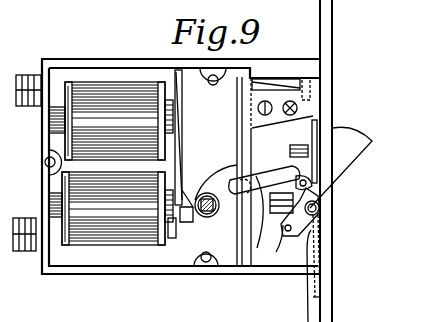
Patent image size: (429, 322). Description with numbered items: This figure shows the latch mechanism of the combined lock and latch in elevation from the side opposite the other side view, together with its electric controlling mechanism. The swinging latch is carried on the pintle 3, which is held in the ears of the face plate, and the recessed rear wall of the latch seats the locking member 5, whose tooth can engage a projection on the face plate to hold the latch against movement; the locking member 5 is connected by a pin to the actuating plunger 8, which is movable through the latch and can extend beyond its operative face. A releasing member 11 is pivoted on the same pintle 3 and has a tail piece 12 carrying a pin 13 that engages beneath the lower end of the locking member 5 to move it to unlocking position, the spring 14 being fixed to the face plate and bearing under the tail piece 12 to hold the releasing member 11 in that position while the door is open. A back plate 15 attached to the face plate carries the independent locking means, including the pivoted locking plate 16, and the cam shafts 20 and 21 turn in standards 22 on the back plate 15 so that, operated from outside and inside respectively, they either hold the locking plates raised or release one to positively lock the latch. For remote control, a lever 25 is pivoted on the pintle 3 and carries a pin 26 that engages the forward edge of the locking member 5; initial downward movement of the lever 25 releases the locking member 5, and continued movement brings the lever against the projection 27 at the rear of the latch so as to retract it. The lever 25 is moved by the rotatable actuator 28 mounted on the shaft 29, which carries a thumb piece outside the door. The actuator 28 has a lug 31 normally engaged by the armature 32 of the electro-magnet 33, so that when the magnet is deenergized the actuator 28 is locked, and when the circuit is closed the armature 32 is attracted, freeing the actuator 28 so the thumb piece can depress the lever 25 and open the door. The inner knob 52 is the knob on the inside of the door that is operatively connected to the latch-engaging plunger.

The pintle 3 is at (319, 209).
The locking member 5 is at (316, 165).
The actuating plunger 8 is at (290, 150).
The releasing member 11 is at (341, 167).
The tail piece 12 is at (290, 237).
The pin 13 is at (315, 218).
The spring 14 is at (303, 272).
The back plate 15 is at (240, 101).
The locking plate 16 is at (262, 82).
The cam shaft 20 is at (295, 117).
The cam shaft 21 is at (267, 116).
The standards 22 is at (280, 97).
The lever 25 is at (266, 214).
The pin 26 is at (306, 183).
The projection 27 is at (290, 185).
The rotatable actuator 28 is at (222, 178).
The shaft 29 is at (207, 217).
The lug 31 is at (188, 222).
The armature 32 is at (172, 236).
The electro-magnet 33 is at (102, 222).
The inner knob 52 is at (181, 115).